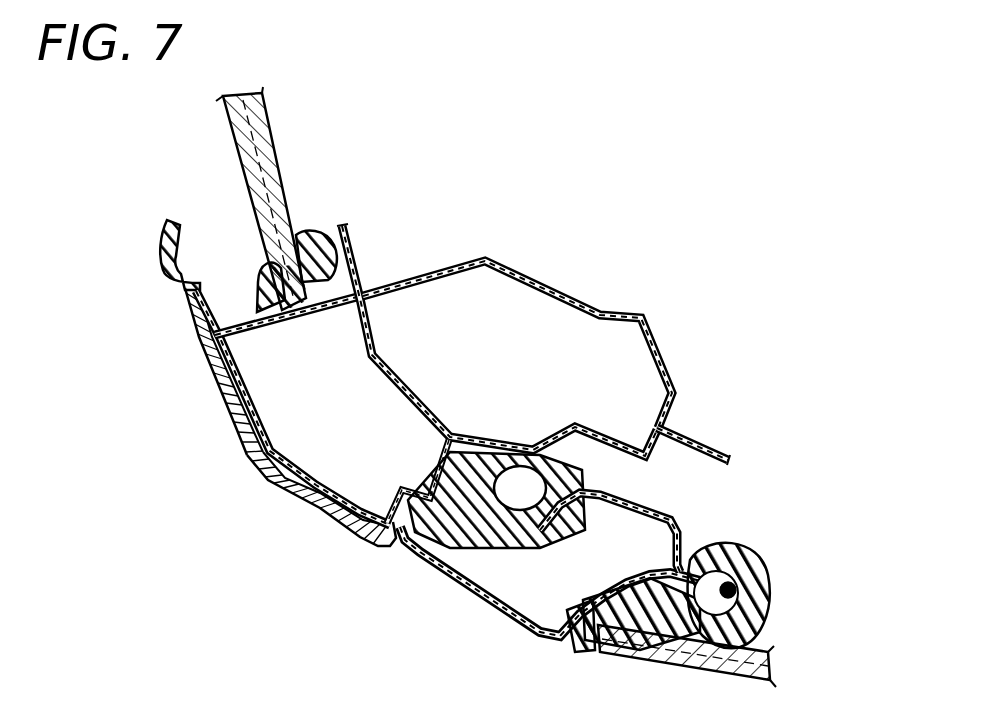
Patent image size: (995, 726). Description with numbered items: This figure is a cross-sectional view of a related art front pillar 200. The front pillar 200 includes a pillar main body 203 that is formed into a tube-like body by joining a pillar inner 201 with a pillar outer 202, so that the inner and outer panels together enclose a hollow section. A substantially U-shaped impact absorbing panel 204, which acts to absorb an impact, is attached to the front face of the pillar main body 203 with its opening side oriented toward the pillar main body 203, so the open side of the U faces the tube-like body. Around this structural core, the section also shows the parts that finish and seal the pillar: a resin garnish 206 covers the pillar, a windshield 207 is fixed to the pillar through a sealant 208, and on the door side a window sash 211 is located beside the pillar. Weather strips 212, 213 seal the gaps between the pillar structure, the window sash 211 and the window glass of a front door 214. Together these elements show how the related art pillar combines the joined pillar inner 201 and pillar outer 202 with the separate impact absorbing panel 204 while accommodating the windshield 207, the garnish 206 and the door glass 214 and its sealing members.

The front pillar 200 is at (580, 237).
The pillar inner 201 is at (583, 300).
The pillar outer 202 is at (623, 450).
The pillar main body 203 is at (432, 265).
The impact absorbing panel 204 is at (223, 390).
The resin garnish 206 is at (318, 517).
The windshield 207 is at (247, 147).
The sealant 208 is at (307, 235).
The window sash 211 is at (487, 605).
The weather strip 212 is at (403, 540).
The weather strip 213 is at (763, 568).
The window glass of a front door 214 is at (760, 647).